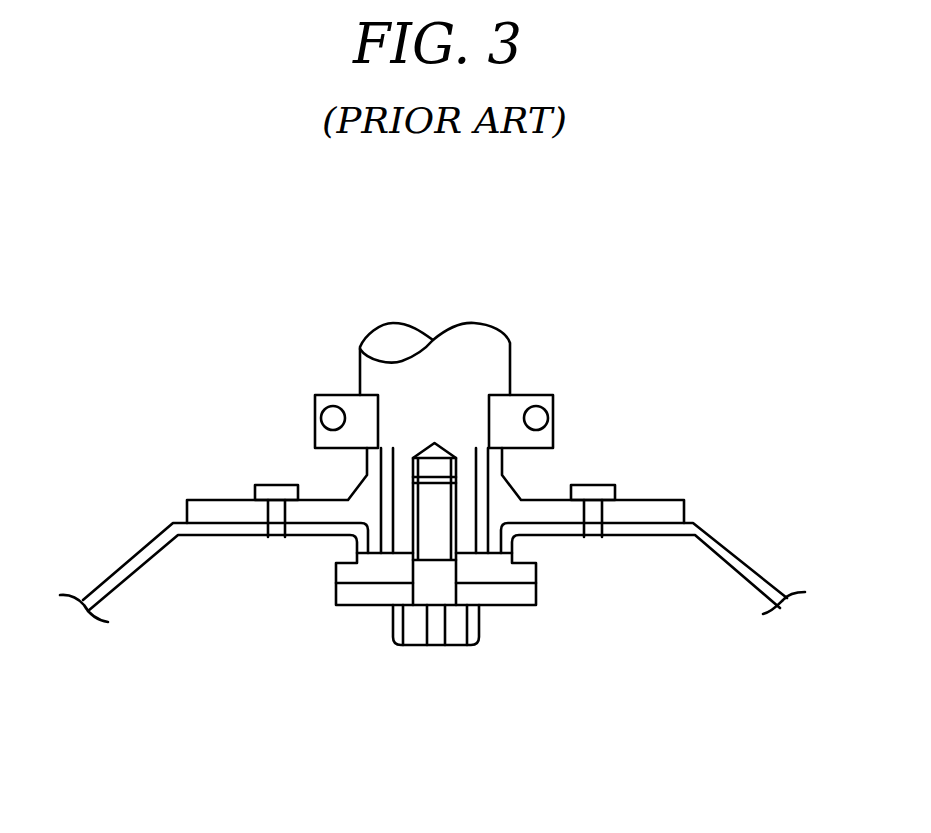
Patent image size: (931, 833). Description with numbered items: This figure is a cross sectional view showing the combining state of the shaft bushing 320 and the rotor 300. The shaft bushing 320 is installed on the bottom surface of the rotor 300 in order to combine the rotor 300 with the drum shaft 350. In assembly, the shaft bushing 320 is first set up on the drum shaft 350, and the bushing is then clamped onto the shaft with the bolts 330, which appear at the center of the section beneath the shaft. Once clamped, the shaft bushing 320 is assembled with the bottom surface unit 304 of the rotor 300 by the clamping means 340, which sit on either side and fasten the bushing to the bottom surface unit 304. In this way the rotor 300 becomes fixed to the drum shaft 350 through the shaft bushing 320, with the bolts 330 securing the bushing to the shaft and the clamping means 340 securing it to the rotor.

The rotor 300 is at (727, 552).
The bottom surface unit 304 is at (237, 520).
The shaft bushing 320 is at (210, 510).
The bolts 330 is at (433, 630).
The clamping means 340 is at (595, 490).
The drum shaft 350 is at (474, 363).